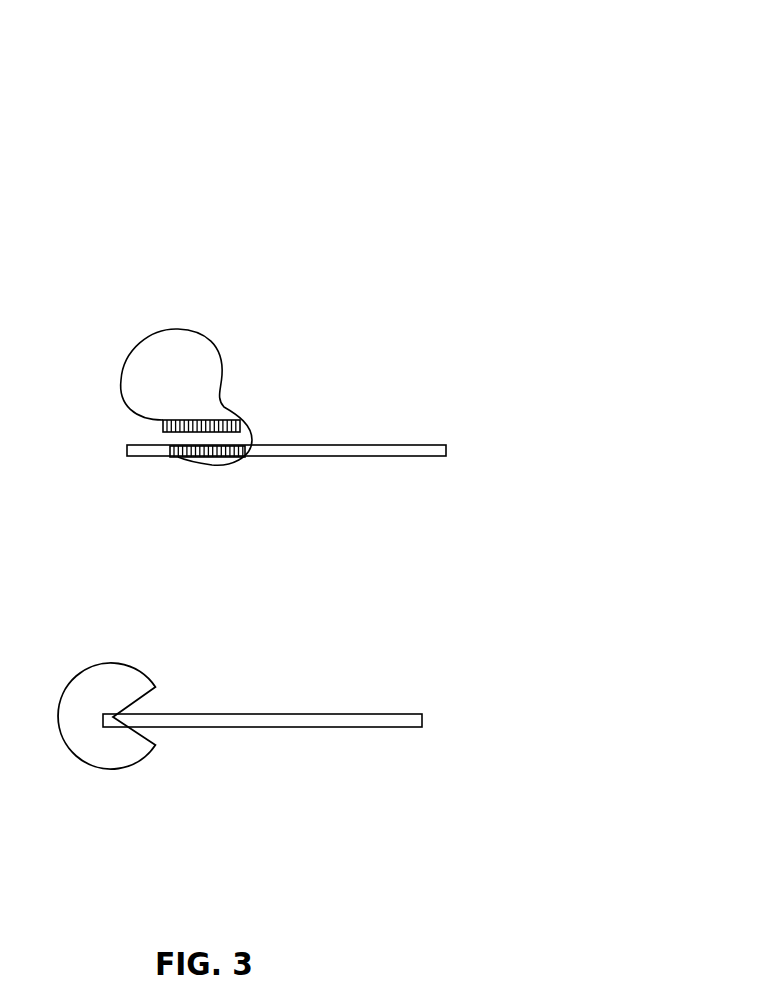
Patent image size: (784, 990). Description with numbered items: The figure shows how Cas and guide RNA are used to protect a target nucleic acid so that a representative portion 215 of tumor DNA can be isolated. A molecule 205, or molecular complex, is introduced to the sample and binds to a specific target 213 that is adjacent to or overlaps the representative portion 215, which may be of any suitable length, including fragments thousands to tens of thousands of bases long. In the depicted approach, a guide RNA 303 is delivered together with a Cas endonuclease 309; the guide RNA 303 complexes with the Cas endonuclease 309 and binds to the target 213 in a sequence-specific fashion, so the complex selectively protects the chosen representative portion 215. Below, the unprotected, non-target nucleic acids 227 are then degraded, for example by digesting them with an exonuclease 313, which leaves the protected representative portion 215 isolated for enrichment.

The molecule 205 is at (187, 94).
The Cas endonuclease 309 is at (212, 338).
The guide RNA 303 is at (185, 420).
The target 213 is at (180, 458).
The representative portion 215 is at (397, 445).
The non-target nucleic acids 227 is at (372, 714).
The exonuclease 313 is at (118, 770).